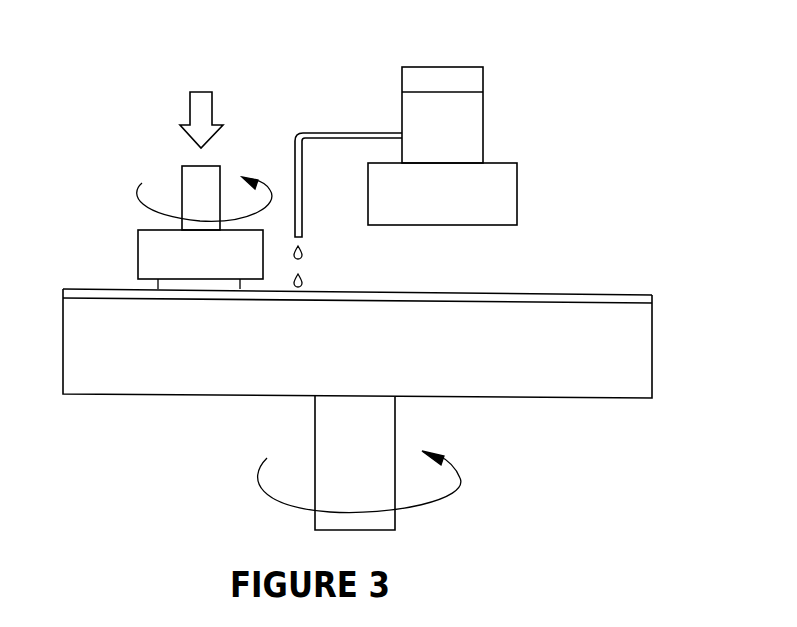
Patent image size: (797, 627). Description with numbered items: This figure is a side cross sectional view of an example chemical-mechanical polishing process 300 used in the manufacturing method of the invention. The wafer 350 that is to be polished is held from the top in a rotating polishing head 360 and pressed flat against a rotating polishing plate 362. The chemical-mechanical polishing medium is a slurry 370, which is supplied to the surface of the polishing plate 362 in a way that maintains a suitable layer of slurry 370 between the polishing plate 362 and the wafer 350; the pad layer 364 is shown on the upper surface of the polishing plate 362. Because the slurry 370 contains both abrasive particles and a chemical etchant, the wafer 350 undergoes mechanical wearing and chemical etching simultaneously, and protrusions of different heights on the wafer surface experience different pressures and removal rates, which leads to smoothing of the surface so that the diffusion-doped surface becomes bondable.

The polishing apparatus 300 is at (196, 70).
The wafer 350 is at (100, 273).
The rotating polishing head 360 is at (155, 255).
The rotating polishing plate 362 is at (633, 343).
The polishing pad 364 is at (522, 270).
The slurry 370 is at (457, 128).